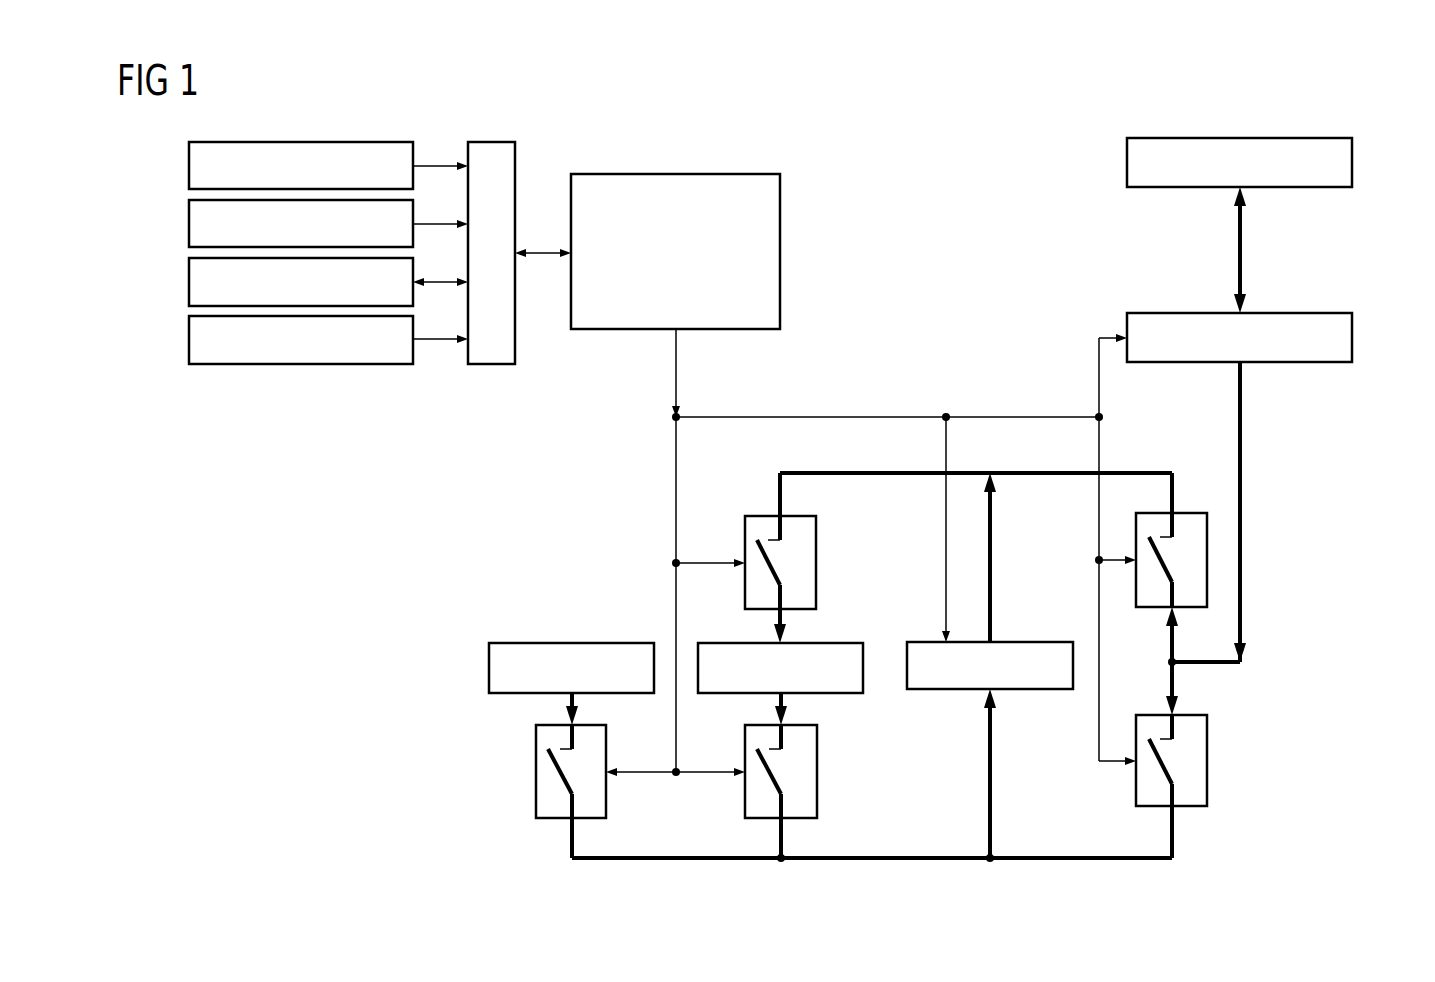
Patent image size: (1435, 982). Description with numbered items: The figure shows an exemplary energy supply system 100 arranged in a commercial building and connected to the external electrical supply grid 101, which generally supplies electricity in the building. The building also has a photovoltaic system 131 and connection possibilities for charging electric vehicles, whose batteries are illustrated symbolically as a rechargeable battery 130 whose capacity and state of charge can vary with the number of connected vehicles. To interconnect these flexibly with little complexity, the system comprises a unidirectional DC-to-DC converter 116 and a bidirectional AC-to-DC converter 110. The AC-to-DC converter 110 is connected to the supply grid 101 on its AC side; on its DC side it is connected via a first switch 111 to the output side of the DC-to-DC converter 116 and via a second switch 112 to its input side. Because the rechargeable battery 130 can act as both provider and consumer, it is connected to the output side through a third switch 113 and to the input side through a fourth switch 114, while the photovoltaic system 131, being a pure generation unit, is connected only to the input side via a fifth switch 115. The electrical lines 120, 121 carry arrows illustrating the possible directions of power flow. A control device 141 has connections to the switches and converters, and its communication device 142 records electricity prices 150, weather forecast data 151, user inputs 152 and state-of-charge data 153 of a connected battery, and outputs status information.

The energy supply system 100 is at (906, 100).
The external electrical supply grid 101 is at (1352, 163).
The bidirectional AC-to-DC converter 110 is at (1352, 338).
The first switch 111 is at (1207, 549).
The second switch 112 is at (1207, 767).
The third switch 113 is at (816, 563).
The fourth switch 114 is at (817, 778).
The fifth switch 115 is at (536, 778).
The unidirectional DC-to-DC converter 116 is at (1040, 642).
The first bus 120 is at (992, 858).
The second bus 121 is at (990, 473).
The rechargeable battery 130 is at (714, 643).
The photovoltaic system 131 is at (563, 643).
The control device 141 is at (671, 174).
The communication device 142 is at (486, 142).
The electricity prices 150 is at (187, 166).
The weather forecast data 151 is at (187, 224).
The user inputs 152 is at (187, 282).
The state-of-charge data 153 is at (187, 339).